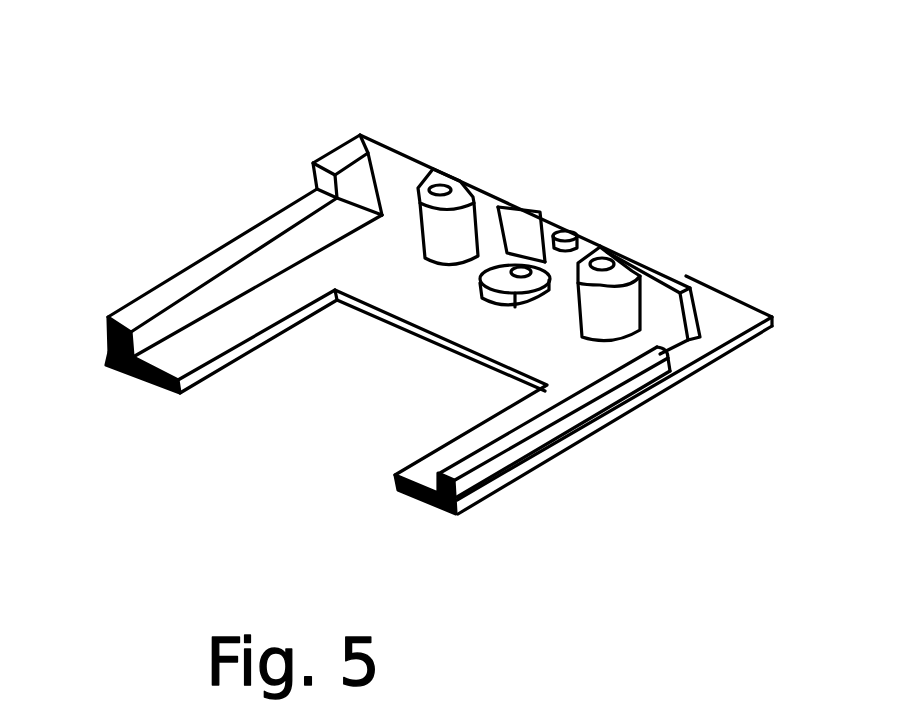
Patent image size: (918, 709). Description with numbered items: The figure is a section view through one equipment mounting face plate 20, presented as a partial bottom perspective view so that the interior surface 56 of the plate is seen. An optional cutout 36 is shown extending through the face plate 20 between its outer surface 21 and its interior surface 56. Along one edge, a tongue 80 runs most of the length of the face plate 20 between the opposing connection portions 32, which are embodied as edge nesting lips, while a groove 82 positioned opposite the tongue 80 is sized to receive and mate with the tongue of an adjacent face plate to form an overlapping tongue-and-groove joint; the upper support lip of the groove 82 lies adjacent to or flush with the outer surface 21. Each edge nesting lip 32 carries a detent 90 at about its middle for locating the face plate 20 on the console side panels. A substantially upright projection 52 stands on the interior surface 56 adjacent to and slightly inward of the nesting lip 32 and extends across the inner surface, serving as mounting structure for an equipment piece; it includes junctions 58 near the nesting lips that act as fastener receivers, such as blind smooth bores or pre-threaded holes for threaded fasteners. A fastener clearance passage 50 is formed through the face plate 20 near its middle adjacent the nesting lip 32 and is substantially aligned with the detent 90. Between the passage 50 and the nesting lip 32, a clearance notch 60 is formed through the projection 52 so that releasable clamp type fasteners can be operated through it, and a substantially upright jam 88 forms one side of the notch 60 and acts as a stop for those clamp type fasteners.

The face plate 20 is at (410, 495).
The outer surface 21 is at (152, 377).
The connection portion 32 is at (724, 310).
The cutout 36 is at (213, 370).
The fastener clearance passage 50 is at (512, 282).
The upright projection 52 is at (680, 277).
The interior surface 56 is at (292, 288).
The junction 58 is at (452, 182).
The clearance notch 60 is at (546, 262).
The tongue 80 is at (460, 498).
The groove 82 is at (110, 345).
The jam 88 is at (514, 226).
The detent 90 is at (567, 232).